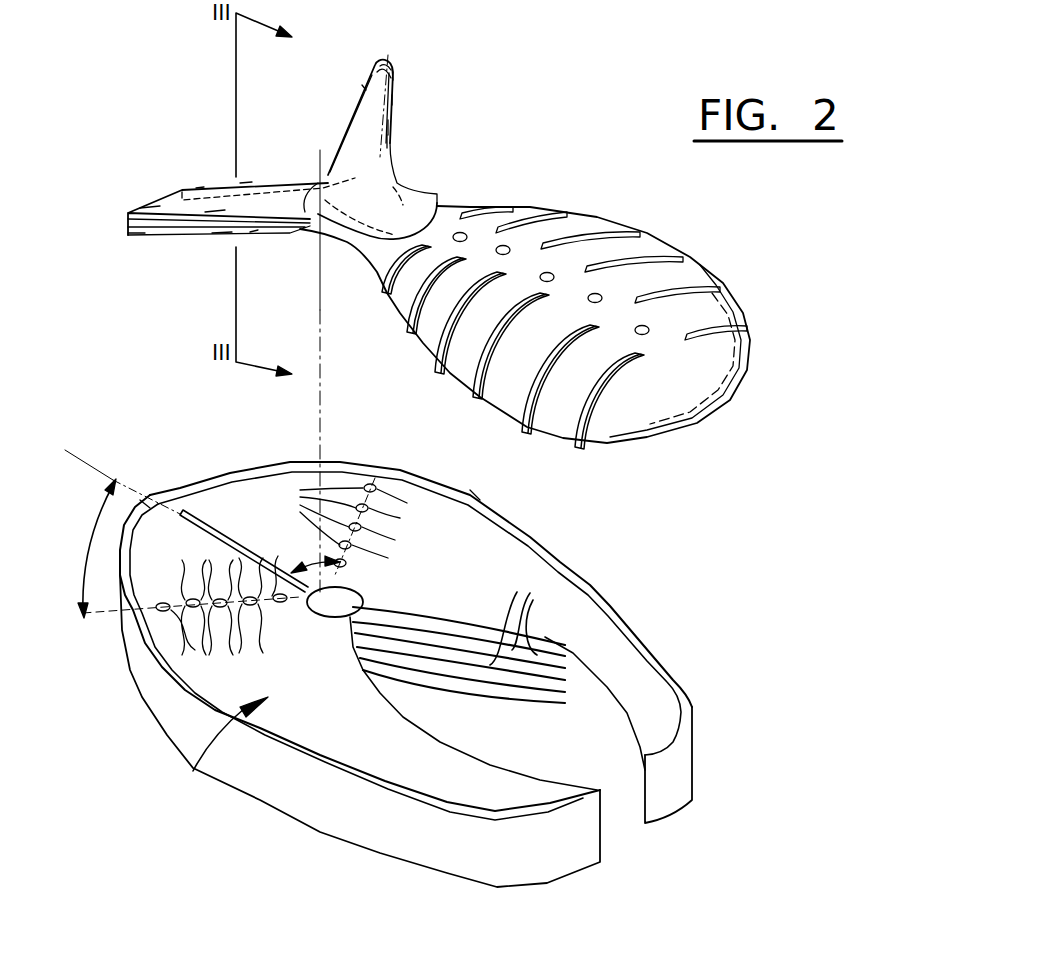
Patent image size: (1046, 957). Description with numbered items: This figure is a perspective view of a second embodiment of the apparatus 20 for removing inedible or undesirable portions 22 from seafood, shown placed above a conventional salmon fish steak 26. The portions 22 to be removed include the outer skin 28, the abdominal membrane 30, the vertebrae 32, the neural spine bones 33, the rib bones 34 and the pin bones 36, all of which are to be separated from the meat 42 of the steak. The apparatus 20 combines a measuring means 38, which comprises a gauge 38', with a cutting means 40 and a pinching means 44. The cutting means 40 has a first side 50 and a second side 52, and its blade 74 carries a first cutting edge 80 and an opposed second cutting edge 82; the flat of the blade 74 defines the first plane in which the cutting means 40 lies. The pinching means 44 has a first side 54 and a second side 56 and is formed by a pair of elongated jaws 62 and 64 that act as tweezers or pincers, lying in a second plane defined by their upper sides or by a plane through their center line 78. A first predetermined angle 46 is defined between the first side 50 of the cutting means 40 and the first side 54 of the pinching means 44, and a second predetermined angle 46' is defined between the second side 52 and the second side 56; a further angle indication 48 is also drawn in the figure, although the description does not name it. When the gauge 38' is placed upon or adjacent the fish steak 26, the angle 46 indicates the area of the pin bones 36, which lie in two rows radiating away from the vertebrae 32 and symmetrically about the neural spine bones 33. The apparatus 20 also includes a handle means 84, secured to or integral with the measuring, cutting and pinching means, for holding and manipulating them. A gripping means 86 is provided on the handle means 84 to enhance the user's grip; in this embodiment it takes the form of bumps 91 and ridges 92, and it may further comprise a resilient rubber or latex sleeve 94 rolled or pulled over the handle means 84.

The apparatus 20 is at (632, 460).
The inedible or undesirable portions 22 is at (660, 663).
The fish steak 26 is at (193, 771).
The skin 28 is at (620, 617).
The membrane 30 is at (447, 643).
The vertebrae 32 is at (365, 594).
The neural spine bones 33 is at (212, 533).
The rib bones 34 is at (533, 640).
The pin bones 36 is at (410, 507).
The measuring means 38 is at (315, 169).
The gauge 38' is at (214, 152).
The cutting means 40 is at (392, 140).
The meat 42 is at (222, 497).
The pinching means 44 is at (178, 224).
The first predetermined angle 46 is at (350, 170).
The second predetermined angle 46' is at (450, 173).
The angle 48 is at (88, 537).
The first side 50 is at (362, 93).
The second side 52 is at (392, 128).
The first side 54 is at (276, 173).
The second side 56 is at (218, 232).
The jaw 62 is at (152, 207).
The jaw 64 is at (133, 237).
The blade 74 is at (387, 64).
The center line 78 is at (213, 208).
The first cutting edge 80 is at (383, 60).
The second cutting edge 82 is at (398, 72).
The handle means 84 is at (722, 375).
The gripping means 86 is at (393, 300).
The bumps 91 is at (466, 240).
The ridges 92 is at (373, 277).
The sleeve 94 is at (698, 390).